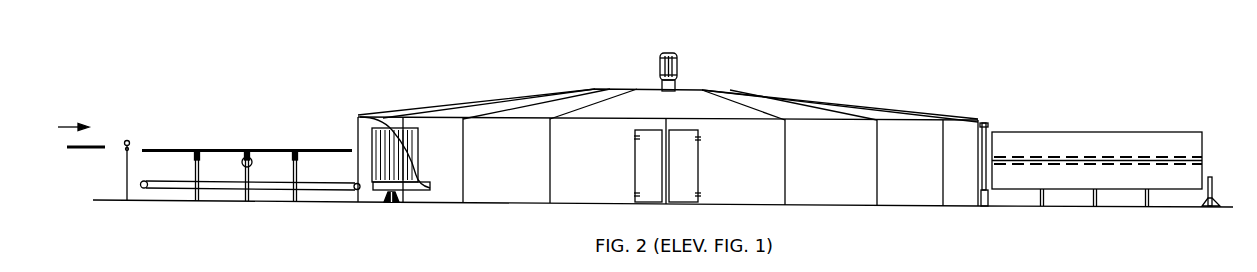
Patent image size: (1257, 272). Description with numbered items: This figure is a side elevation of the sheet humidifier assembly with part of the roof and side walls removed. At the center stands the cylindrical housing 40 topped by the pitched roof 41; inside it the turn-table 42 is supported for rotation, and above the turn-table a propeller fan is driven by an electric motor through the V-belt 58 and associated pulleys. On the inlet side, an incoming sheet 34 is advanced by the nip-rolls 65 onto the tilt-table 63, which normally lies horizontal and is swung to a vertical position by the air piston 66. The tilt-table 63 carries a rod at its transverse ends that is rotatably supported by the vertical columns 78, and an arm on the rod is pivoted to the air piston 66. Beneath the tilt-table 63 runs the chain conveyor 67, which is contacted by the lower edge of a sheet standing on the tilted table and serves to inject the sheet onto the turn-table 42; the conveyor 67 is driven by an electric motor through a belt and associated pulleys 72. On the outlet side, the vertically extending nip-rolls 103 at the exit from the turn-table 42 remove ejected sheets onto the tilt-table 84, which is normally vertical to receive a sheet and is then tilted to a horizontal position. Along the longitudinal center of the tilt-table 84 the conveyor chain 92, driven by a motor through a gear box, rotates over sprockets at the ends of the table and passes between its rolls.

The incoming sheet 34 is at (96, 145).
The nip-rolls 65 is at (131, 141).
The tilt-table 63 is at (228, 148).
The air piston 66 is at (242, 164).
The chain conveyor 67 is at (183, 189).
The pulleys 72 is at (141, 188).
The vertical columns 78 is at (200, 202).
The turn-table 42 is at (408, 187).
The cylindrical housing 40 is at (551, 204).
The V-belt 58 is at (679, 63).
The pitched roof 41 is at (823, 102).
The vertically extending nip-rolls 103 is at (988, 130).
The tilt-table 84 is at (1121, 143).
The conveyor chain 92 is at (1188, 160).